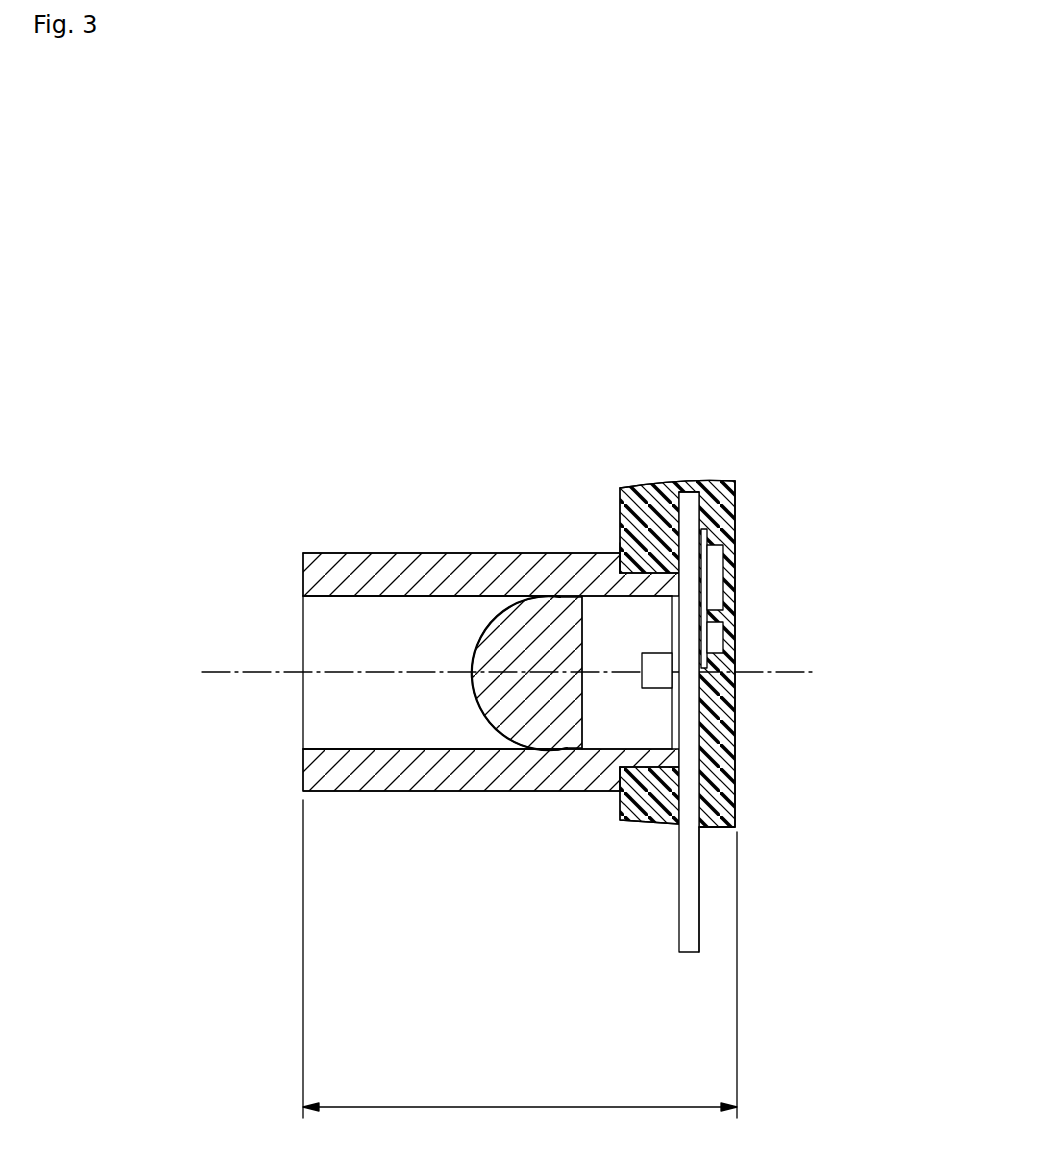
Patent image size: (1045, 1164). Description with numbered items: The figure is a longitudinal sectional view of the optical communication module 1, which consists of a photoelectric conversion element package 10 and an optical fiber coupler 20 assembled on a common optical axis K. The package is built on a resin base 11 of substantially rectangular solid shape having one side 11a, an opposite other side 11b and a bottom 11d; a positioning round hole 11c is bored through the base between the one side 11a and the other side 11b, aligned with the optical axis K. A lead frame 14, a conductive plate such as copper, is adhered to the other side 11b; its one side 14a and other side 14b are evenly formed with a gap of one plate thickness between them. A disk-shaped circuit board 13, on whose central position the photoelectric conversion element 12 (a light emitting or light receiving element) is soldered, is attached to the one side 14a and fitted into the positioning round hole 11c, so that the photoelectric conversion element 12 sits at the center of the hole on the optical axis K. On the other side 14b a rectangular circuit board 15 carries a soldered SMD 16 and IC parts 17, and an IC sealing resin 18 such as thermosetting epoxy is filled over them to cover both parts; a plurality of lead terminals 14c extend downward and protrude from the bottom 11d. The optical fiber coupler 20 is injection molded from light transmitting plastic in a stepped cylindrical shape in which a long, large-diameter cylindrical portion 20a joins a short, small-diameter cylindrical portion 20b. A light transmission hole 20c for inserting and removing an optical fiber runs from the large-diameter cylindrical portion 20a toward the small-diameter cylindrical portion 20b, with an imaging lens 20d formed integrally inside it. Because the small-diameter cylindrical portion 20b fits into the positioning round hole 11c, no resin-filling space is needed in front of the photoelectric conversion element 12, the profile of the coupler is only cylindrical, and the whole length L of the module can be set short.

The optical communication module 1 is at (364, 408).
The photoelectric conversion element package 10 is at (800, 528).
The resin base 11 is at (647, 476).
The one side of the resin base 11a is at (620, 503).
The other side of the resin base 11b is at (717, 482).
The positioning round hole 11c is at (540, 538).
The bottom of the resin base 11d is at (663, 823).
The photoelectric conversion element 12 is at (640, 681).
The disk-shaped circuit board 13 is at (670, 723).
The lead frame 14 is at (687, 960).
The one side of the lead frame 14a is at (689, 492).
The other side of the lead frame 14b is at (728, 497).
The lead terminals 14c is at (700, 902).
The rectangular circuit board 15 is at (707, 663).
The SMD 16 is at (717, 642).
The IC parts 17 is at (717, 595).
The IC sealing resin 18 is at (728, 740).
The optical fiber coupler 20 is at (292, 564).
The large-diameter cylindrical portion 20a is at (388, 553).
The small-diameter cylindrical portion 20b is at (620, 543).
The light transmission hole 20c is at (335, 749).
The imaging lens 20d is at (497, 698).
The optical axis K is at (225, 672).
The whole length L is at (520, 959).